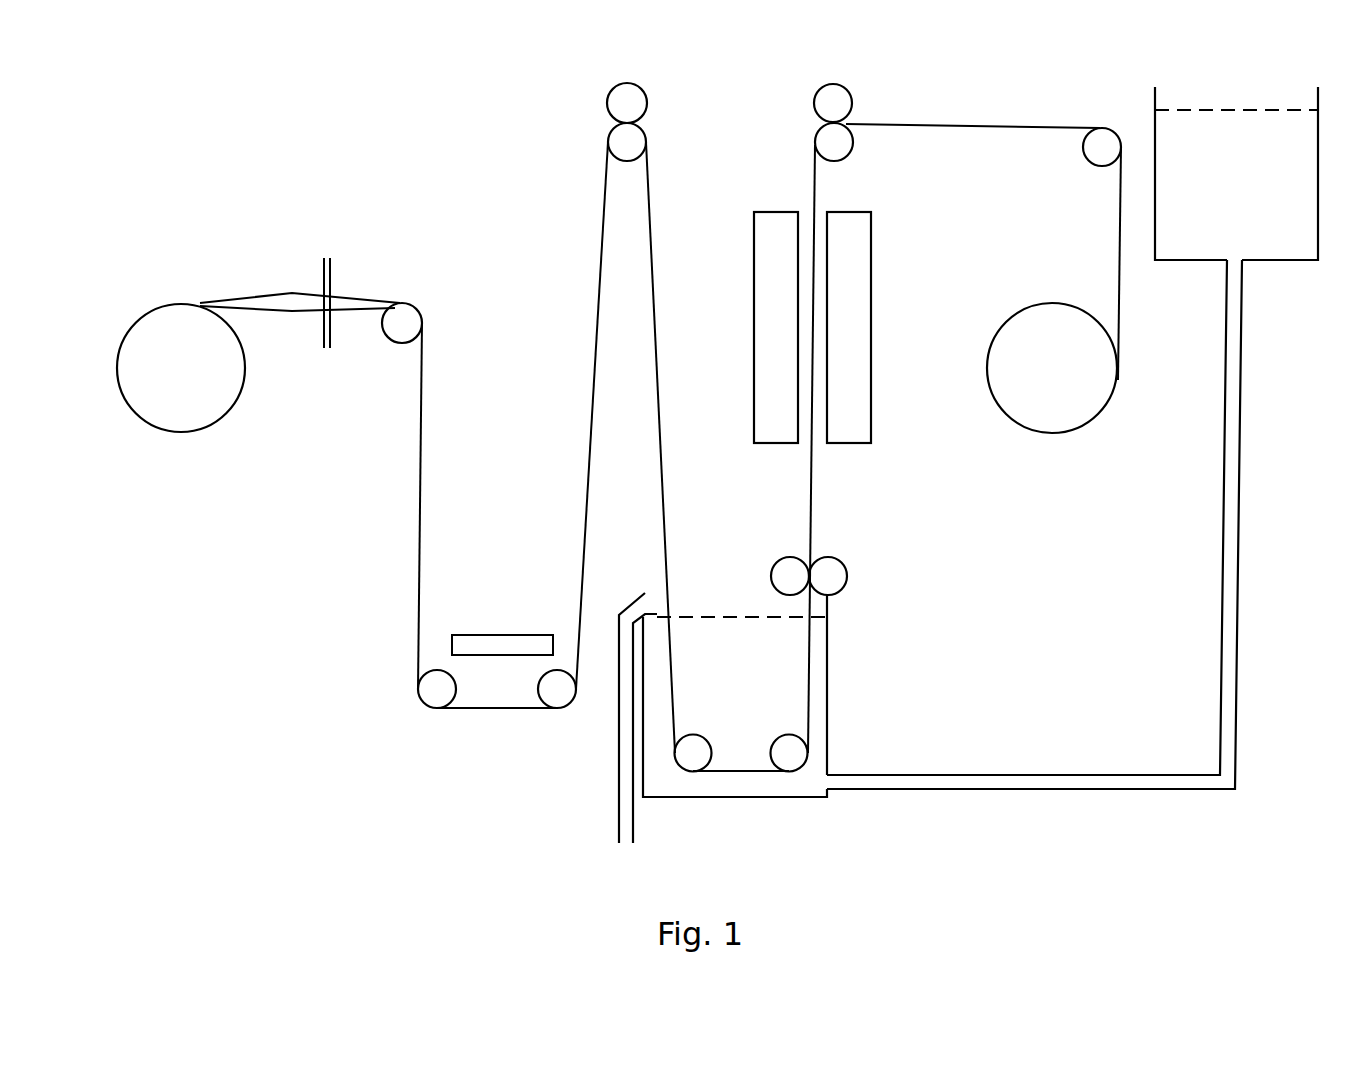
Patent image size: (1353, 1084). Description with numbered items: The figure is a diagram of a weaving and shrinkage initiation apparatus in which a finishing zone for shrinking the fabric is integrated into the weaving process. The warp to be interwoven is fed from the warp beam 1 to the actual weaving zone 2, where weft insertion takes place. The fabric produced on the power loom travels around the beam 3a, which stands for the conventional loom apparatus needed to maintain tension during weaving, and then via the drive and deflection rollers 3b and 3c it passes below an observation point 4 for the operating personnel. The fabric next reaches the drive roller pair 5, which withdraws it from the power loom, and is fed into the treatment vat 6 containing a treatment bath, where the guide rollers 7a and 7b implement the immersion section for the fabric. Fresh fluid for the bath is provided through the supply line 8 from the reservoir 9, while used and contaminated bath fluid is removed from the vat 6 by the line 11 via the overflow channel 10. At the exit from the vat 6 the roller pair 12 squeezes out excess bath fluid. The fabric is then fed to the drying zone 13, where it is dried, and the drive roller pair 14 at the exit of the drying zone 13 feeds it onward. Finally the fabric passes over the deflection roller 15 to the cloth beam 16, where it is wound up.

The warp beam 1 is at (183, 348).
The weaving zone 2 is at (291, 295).
The beam 3a is at (403, 318).
The drive and deflection roller 3b is at (436, 688).
The drive and deflection roller 3c is at (557, 688).
The observation point 4 is at (493, 645).
The drive roller pair 5 is at (625, 101).
The treatment vat 6 is at (737, 690).
The guide roller 7a is at (693, 755).
The guide roller 7b is at (788, 755).
The supply line 8 is at (1063, 780).
The reservoir 9 is at (1273, 212).
The overflow channel 10 is at (631, 610).
The line 11 is at (622, 798).
The roller pair 12 is at (827, 576).
The drying zone 13 is at (843, 302).
The drive roller pair 14 is at (830, 102).
The deflection roller 15 is at (1103, 148).
The cloth beam 16 is at (1057, 387).